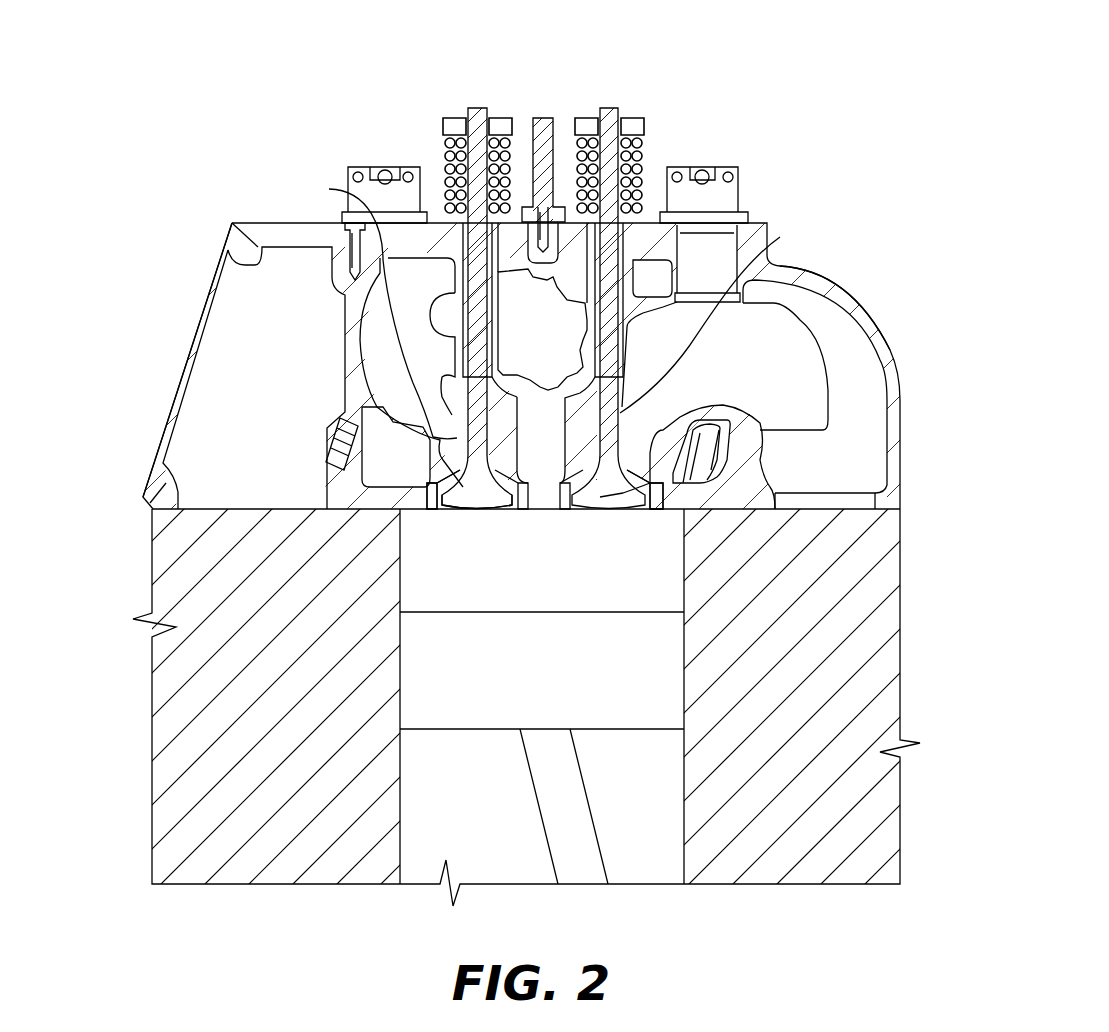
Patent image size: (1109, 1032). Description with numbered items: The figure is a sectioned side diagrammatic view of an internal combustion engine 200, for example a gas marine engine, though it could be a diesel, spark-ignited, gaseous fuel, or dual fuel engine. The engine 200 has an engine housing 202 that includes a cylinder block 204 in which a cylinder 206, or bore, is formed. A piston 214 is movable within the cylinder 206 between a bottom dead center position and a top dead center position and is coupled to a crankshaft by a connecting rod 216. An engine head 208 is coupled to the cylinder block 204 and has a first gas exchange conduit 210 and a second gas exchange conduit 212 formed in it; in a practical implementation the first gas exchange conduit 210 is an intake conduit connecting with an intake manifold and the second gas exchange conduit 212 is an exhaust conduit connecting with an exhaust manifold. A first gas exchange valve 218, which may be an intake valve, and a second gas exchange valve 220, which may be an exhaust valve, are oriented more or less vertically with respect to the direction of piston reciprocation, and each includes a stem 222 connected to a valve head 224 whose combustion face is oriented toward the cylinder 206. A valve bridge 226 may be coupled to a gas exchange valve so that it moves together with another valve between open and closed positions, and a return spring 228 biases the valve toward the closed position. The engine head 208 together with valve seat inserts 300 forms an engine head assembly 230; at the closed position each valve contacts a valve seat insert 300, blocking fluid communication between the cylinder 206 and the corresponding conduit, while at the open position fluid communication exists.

The internal combustion engine 200 is at (760, 66).
The engine housing 202 is at (922, 487).
The cylinder block 204 is at (862, 691).
The cylinder 206 is at (518, 581).
The engine head 208 is at (862, 308).
The first gas exchange conduit 210 is at (850, 395).
The second gas exchange conduit 212 is at (374, 308).
The piston 214 is at (623, 718).
The connecting rod 216 is at (563, 793).
The first gas exchange valve 218 is at (624, 504).
The second gas exchange valve 220 is at (470, 496).
The stem 222 is at (417, 430).
The valve head 224 is at (488, 503).
The valve bridge 226 is at (630, 117).
The return spring 228 is at (637, 168).
The engine head assembly 230 is at (126, 330).
The valve seat insert 300 is at (418, 490).